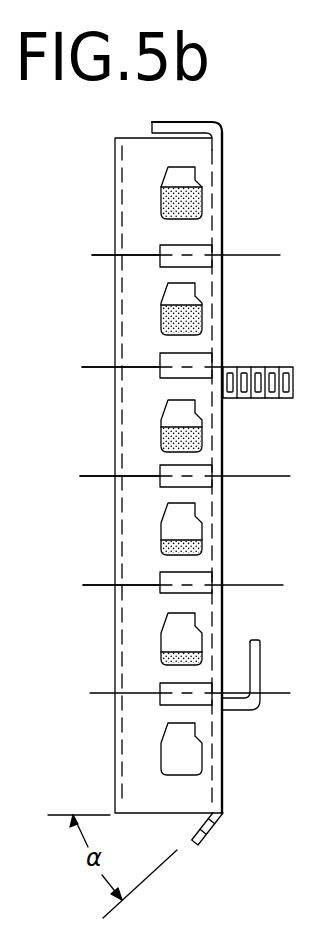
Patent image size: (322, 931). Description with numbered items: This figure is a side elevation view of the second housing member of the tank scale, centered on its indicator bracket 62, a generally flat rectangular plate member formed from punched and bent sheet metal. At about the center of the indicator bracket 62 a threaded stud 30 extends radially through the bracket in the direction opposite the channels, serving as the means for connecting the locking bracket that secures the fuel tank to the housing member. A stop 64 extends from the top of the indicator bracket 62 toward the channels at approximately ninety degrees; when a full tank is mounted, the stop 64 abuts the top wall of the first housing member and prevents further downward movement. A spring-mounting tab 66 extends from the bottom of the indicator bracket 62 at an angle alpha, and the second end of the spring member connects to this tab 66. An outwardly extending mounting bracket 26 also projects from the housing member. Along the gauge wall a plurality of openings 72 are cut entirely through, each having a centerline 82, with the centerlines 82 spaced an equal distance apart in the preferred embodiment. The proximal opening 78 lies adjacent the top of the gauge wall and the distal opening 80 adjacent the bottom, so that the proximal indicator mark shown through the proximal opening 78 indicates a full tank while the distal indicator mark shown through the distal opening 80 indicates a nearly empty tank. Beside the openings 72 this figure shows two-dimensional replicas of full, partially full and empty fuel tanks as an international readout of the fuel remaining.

The mounting bracket 26 is at (260, 673).
The threaded stud 30 is at (268, 398).
The indicator bracket 62 is at (222, 760).
The stop 64 is at (182, 125).
The spring-mounting tab 66 is at (198, 843).
The openings 72 is at (190, 363).
The proximal opening 78 is at (188, 250).
The distal opening 80 is at (178, 700).
The centerline 82 is at (100, 367).